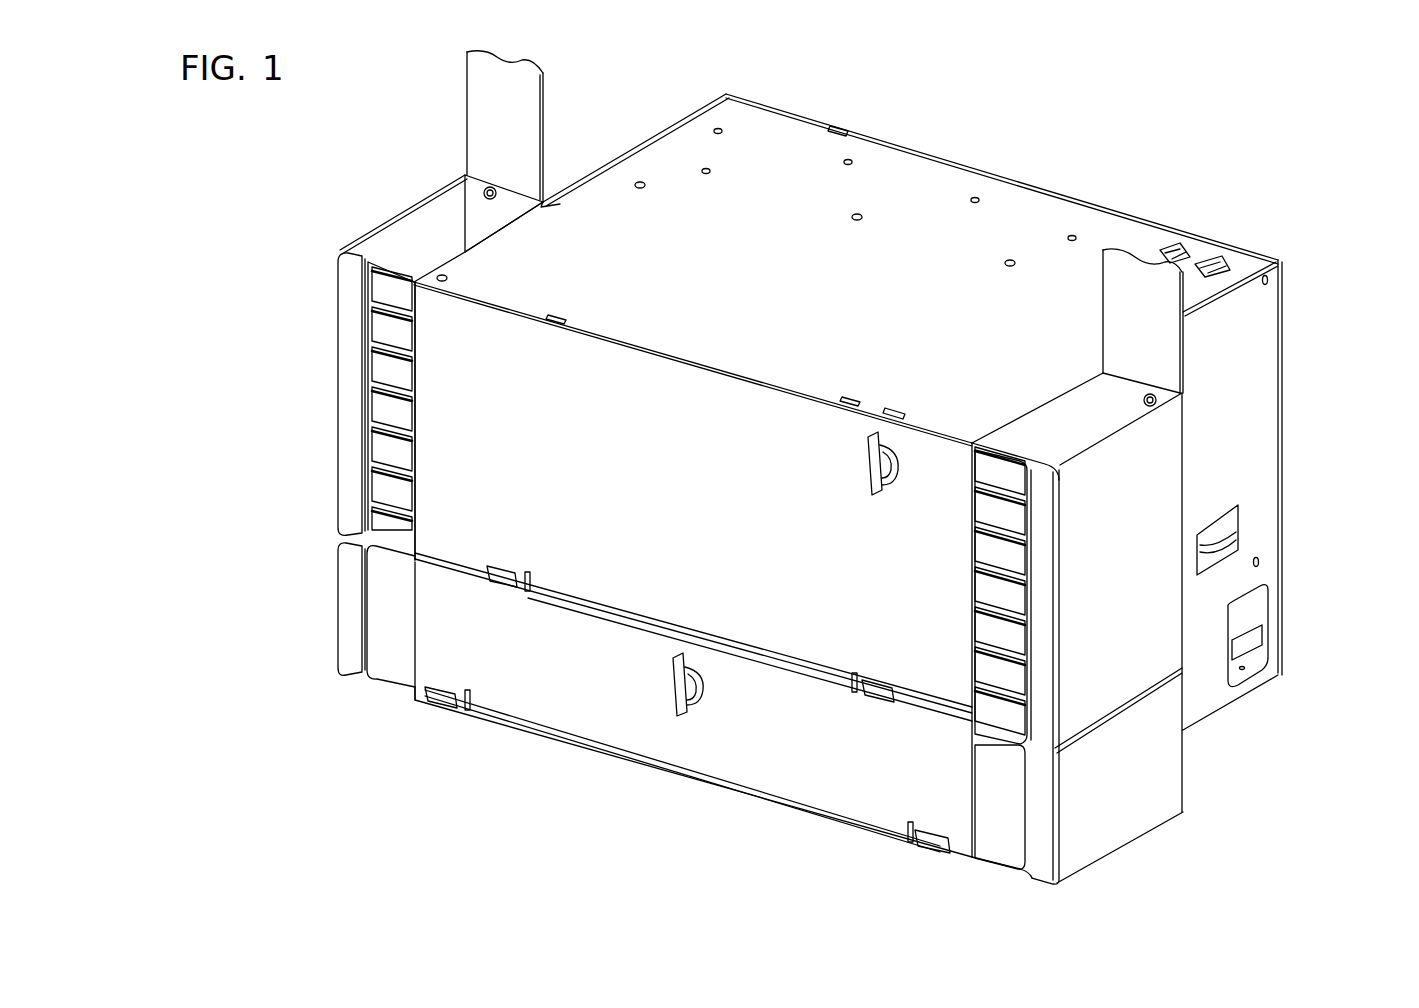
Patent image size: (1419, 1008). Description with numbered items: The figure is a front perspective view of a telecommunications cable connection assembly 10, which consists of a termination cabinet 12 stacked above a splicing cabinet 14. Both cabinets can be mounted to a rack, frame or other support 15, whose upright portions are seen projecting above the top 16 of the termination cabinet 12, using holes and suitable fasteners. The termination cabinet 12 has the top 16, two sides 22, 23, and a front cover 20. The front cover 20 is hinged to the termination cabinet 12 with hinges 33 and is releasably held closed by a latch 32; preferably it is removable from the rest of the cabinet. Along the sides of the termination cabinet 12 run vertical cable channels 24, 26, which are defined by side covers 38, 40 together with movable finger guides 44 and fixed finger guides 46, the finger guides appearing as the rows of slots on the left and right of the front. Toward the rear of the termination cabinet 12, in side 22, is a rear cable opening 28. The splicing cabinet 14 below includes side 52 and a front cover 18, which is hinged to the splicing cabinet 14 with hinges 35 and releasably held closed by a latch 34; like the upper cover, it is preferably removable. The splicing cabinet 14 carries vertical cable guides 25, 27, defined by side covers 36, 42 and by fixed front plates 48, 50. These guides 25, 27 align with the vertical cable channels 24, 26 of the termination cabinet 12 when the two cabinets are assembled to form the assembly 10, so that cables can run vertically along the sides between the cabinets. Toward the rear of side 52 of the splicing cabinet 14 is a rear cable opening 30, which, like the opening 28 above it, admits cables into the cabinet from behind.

The telecommunications assembly 10 is at (360, 158).
The termination cabinet 12 is at (329, 367).
The splicing cabinet 14 is at (325, 655).
The support 15 is at (480, 100).
The top 16 is at (1005, 210).
The front cover 18 is at (625, 735).
The front cover 20 is at (470, 328).
The side 22 is at (1253, 345).
The side 23 is at (632, 132).
The vertical cable channel 24 is at (1128, 392).
The vertical cable guide 25 is at (1085, 871).
The vertical cable channel 26 is at (515, 208).
The vertical cable guide 27 is at (395, 690).
The rear cable opening 28 is at (1218, 530).
The rear cable opening 30 is at (1255, 640).
The latch 32 is at (866, 463).
The hinges 33 is at (878, 690).
The latch 34 is at (672, 680).
The hinges 35 is at (945, 830).
The side cover 36 is at (1148, 810).
The side cover 38 is at (1120, 678).
The side cover 40 is at (348, 378).
The side cover 42 is at (350, 564).
The movable finger guides 44 is at (384, 360).
The fixed finger guides 46 is at (1013, 585).
The fixed front plate 48 is at (1010, 847).
The fixed front plate 50 is at (385, 660).
The side 52 is at (1245, 582).